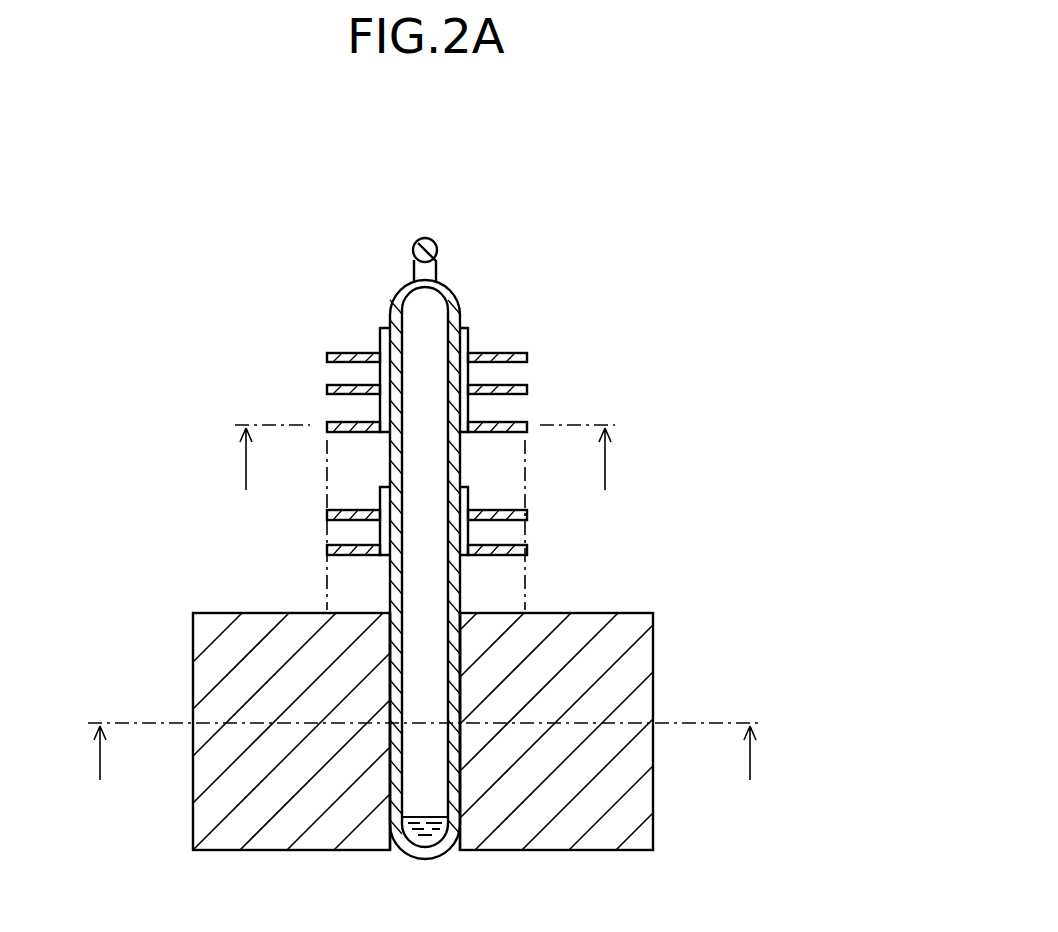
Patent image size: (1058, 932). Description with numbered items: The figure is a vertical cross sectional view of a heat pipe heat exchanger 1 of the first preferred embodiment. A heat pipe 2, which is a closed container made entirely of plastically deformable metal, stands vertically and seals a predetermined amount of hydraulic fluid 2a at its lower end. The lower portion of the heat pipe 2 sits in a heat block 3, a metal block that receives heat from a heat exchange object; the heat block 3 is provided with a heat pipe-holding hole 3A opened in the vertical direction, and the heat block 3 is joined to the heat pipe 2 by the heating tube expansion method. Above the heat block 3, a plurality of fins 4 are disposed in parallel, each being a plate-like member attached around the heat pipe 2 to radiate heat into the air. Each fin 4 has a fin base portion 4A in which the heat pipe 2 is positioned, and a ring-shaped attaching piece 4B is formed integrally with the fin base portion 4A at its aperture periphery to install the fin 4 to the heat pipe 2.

The heat pipe heat exchanger 1 is at (456, 267).
The heat pipe 2 is at (390, 281).
The hydraulic fluid 2a is at (432, 847).
The heat block 3 is at (640, 633).
The heat pipe-holding hole 3A is at (430, 632).
The fin 4 is at (540, 352).
The fin base portion 4A is at (388, 540).
The attaching piece 4B is at (383, 330).